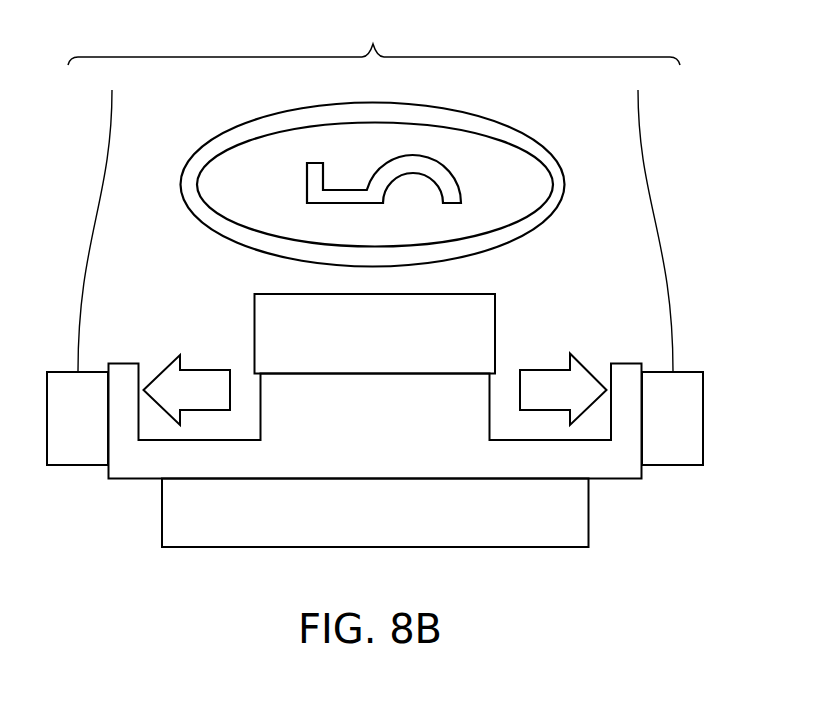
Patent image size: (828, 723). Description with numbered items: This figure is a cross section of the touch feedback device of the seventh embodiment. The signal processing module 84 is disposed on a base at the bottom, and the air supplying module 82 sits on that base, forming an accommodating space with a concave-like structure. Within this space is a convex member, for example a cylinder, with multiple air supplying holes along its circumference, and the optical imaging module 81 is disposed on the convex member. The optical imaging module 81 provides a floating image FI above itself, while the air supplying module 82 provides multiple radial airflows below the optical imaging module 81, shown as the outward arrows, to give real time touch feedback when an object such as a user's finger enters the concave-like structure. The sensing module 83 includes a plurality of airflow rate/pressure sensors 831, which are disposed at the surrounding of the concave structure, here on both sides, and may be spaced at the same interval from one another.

The sensing module 83 is at (374, 41).
The airflow rate/pressure sensors 831 is at (375, 263).
The floating image FI is at (463, 112).
The optical imaging module 81 is at (495, 333).
The air supplying module 82 is at (123, 363).
The signal processing module 84 is at (588, 513).